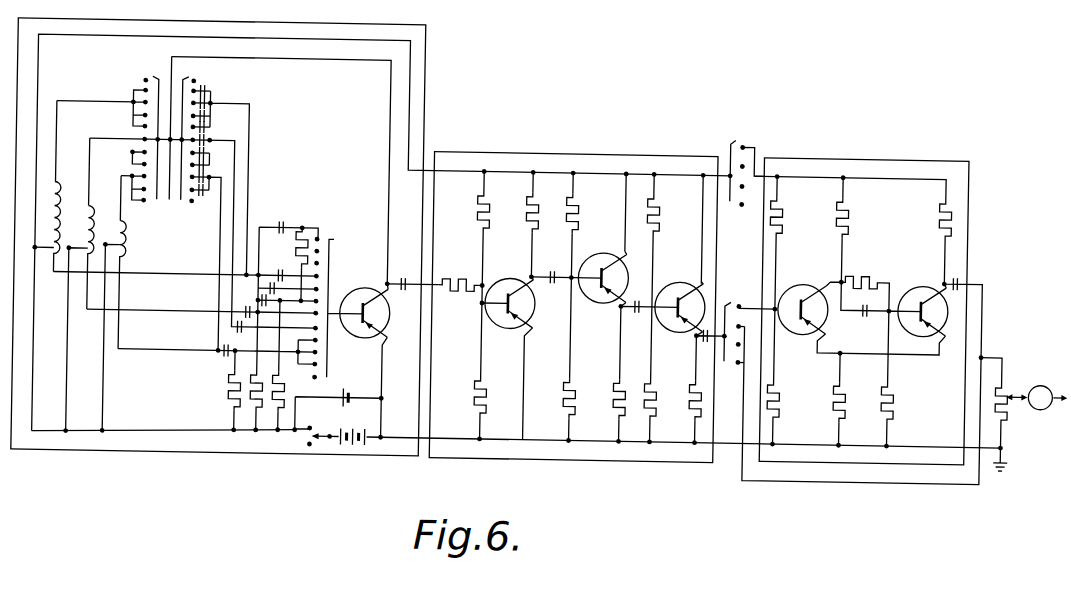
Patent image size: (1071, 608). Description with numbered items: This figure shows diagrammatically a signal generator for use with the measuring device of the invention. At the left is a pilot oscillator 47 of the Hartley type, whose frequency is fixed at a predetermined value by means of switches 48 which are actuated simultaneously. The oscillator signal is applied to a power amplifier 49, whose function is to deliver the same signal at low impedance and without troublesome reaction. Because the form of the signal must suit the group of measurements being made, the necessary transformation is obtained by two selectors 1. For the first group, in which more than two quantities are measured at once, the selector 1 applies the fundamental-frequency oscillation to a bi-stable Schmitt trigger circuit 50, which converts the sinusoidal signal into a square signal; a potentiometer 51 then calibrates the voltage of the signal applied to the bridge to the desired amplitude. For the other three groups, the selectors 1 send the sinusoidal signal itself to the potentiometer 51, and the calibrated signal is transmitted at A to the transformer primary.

The pilot oscillator 47 is at (508, 257).
The switches 48 is at (178, 84).
The power amplifier 49 is at (563, 460).
The bi-stable Schmitt trigger circuit 50 is at (857, 458).
The potentiometer 51 is at (1006, 384).
The selectors 1 is at (727, 146).